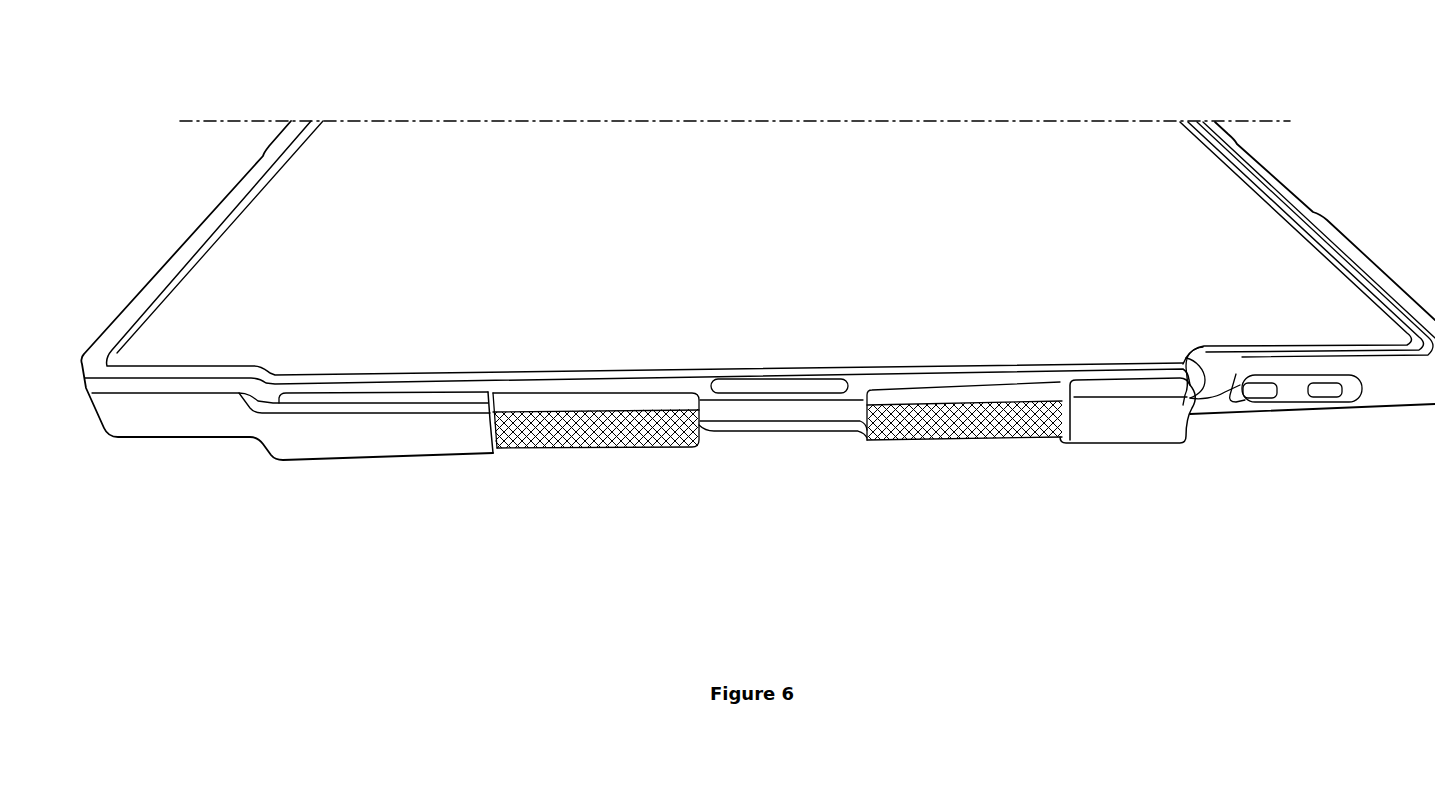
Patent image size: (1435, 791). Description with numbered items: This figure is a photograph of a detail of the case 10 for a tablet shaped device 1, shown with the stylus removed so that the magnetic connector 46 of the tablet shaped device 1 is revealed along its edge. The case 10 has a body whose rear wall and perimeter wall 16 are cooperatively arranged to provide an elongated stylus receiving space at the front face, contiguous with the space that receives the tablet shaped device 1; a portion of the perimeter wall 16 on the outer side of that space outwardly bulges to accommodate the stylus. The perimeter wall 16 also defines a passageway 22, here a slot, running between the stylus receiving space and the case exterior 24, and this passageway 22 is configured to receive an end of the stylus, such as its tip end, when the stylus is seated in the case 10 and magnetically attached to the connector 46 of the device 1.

The tablet shaped device 1 is at (752, 242).
The case 10 is at (385, 522).
The perimeter wall 16 is at (610, 447).
The passageway 22 is at (1218, 442).
The case exterior 24 is at (1052, 533).
The magnetic connector 46 is at (779, 386).